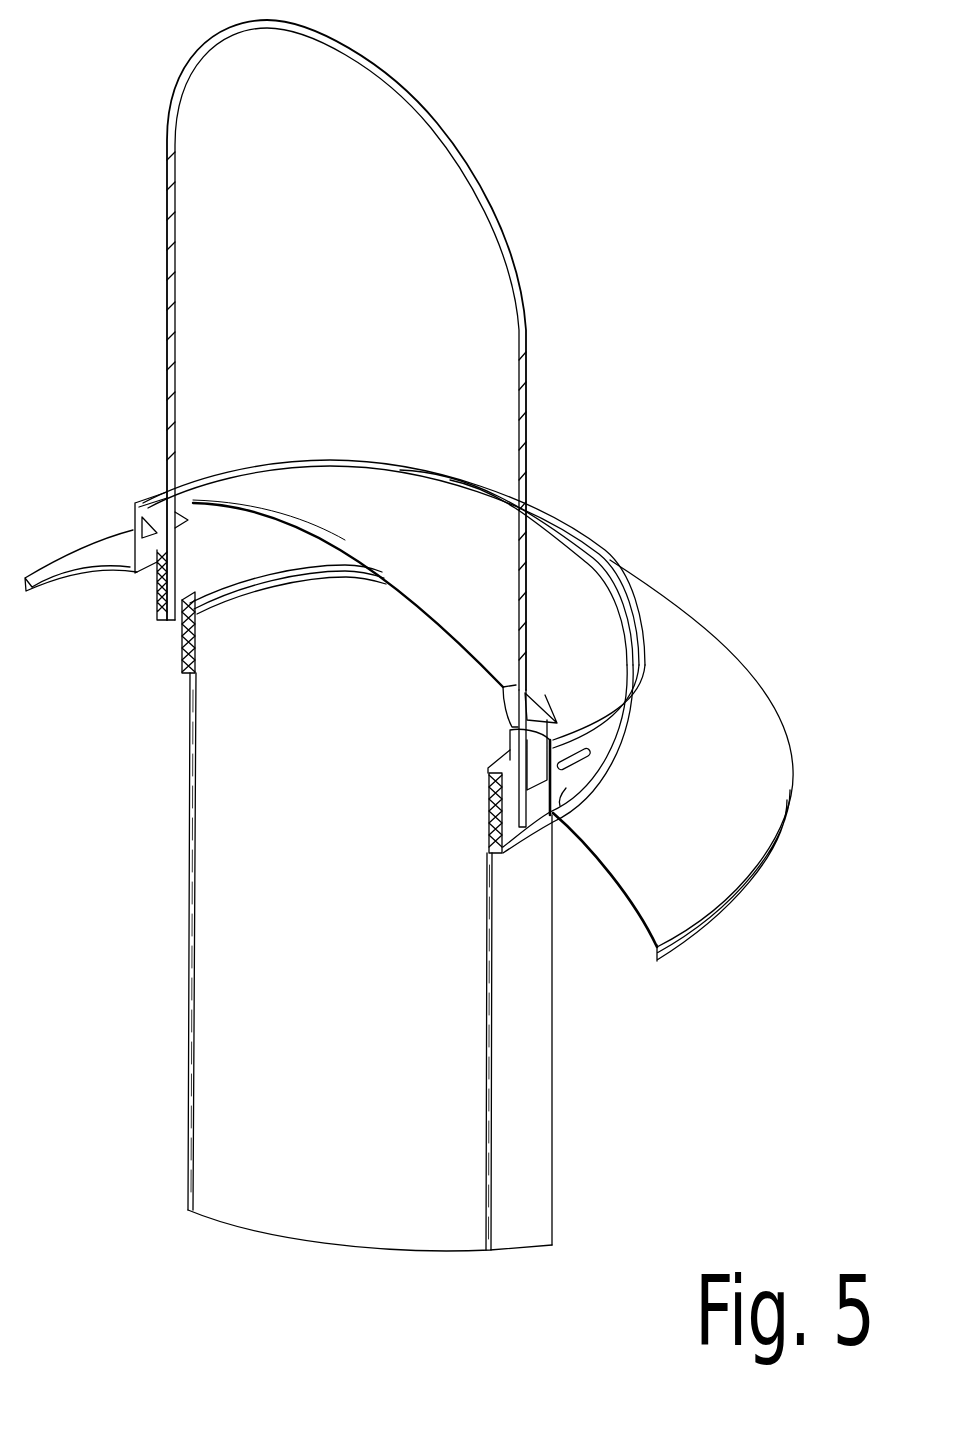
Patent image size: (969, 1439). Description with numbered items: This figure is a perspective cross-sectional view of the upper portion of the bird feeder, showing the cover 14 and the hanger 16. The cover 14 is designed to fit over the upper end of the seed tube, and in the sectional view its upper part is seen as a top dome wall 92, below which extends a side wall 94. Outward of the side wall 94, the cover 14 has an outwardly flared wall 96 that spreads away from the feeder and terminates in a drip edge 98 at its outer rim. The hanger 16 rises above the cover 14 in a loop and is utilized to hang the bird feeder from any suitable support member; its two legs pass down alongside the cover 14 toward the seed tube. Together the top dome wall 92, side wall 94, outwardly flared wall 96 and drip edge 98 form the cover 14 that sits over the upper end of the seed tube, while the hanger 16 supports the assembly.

The cover 14 is at (720, 490).
The hanger 16 is at (565, 171).
The top dome wall 92 is at (437, 546).
The side wall 94 is at (500, 850).
The outwardly flared wall 96 is at (720, 782).
The drip edge 98 is at (683, 943).